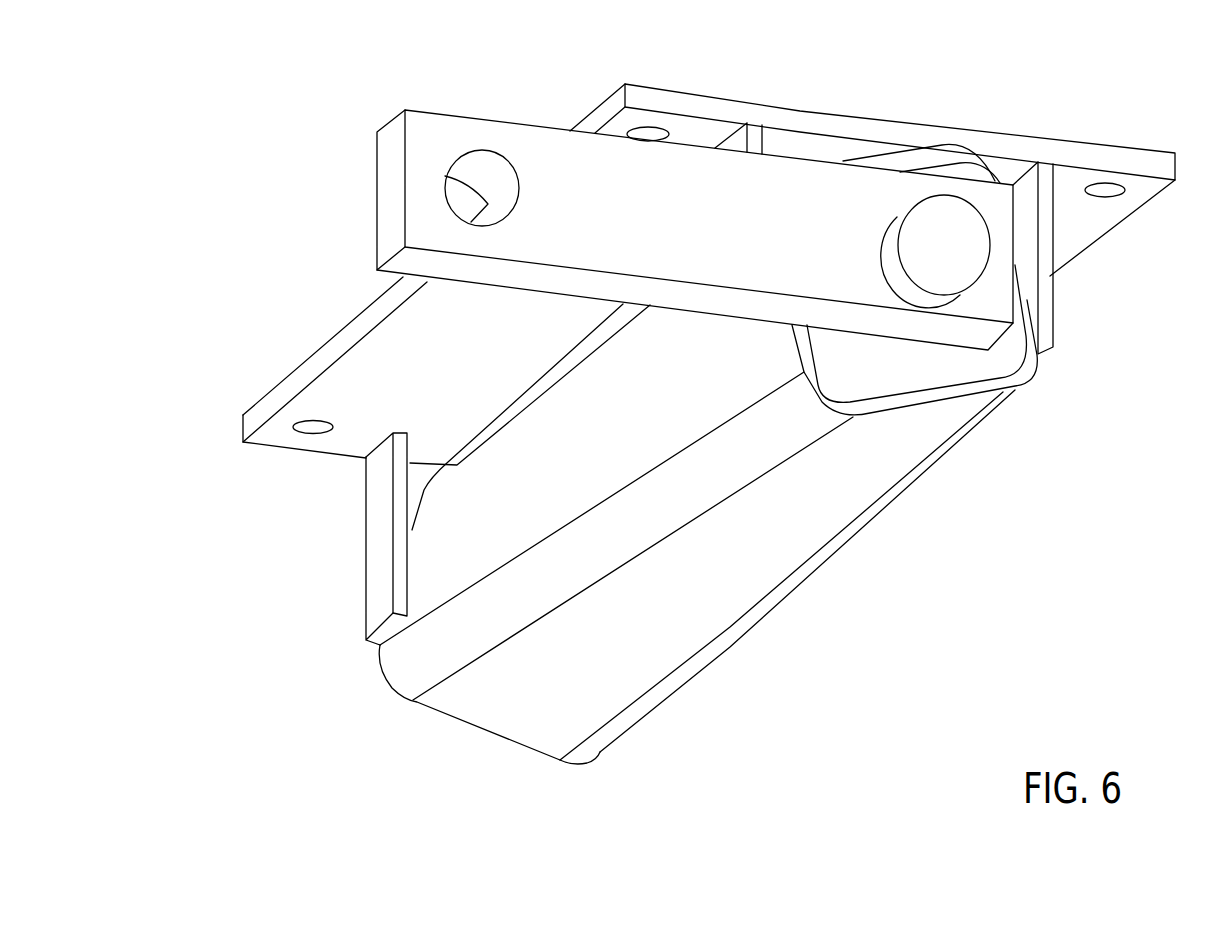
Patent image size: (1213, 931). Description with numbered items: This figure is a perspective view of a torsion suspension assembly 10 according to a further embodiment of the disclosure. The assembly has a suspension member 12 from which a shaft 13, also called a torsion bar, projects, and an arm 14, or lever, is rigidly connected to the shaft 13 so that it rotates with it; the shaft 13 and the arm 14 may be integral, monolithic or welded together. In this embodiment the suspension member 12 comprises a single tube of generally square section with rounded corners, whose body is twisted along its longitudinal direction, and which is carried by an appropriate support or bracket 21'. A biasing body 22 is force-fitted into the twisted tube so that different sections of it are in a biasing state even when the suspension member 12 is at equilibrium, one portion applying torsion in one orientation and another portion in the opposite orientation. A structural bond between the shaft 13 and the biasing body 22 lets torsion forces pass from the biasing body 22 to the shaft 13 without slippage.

The torsion suspension assembly 10 is at (847, 576).
The suspension member 12 is at (721, 670).
The shaft 13 is at (945, 240).
The arm 14 is at (658, 182).
The bracket 21' is at (712, 271).
The biasing body 22 is at (905, 372).